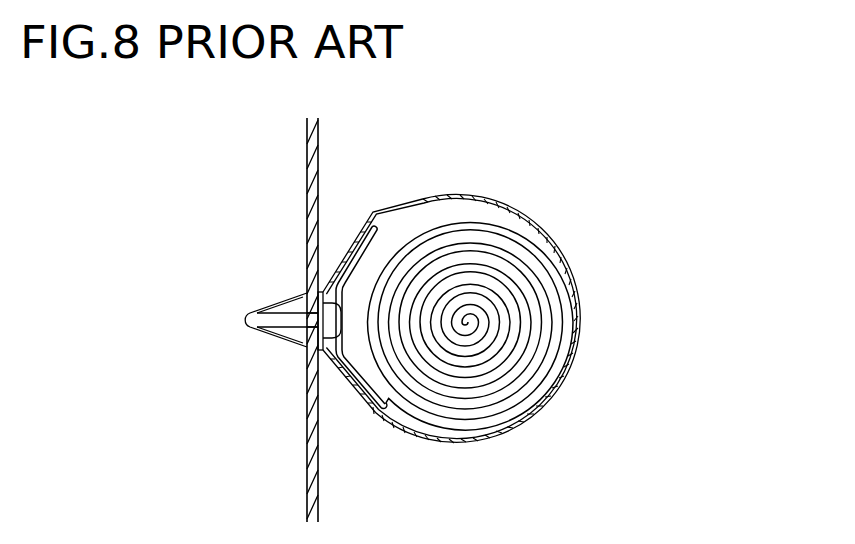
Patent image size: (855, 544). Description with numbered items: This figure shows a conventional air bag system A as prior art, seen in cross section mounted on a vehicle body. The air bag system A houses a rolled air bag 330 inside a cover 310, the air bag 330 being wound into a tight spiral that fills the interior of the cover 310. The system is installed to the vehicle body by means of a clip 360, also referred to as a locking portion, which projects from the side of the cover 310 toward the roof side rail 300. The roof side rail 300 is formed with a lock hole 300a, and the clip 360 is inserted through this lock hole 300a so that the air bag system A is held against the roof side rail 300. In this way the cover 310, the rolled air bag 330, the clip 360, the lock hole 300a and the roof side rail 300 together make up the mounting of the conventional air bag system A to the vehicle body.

The roof side rail 300 is at (307, 423).
The lock hole 300a is at (296, 296).
The cover 310 is at (460, 195).
The rolled air bag 330 is at (574, 303).
The clip 360 is at (253, 307).
The air bag system A is at (496, 283).